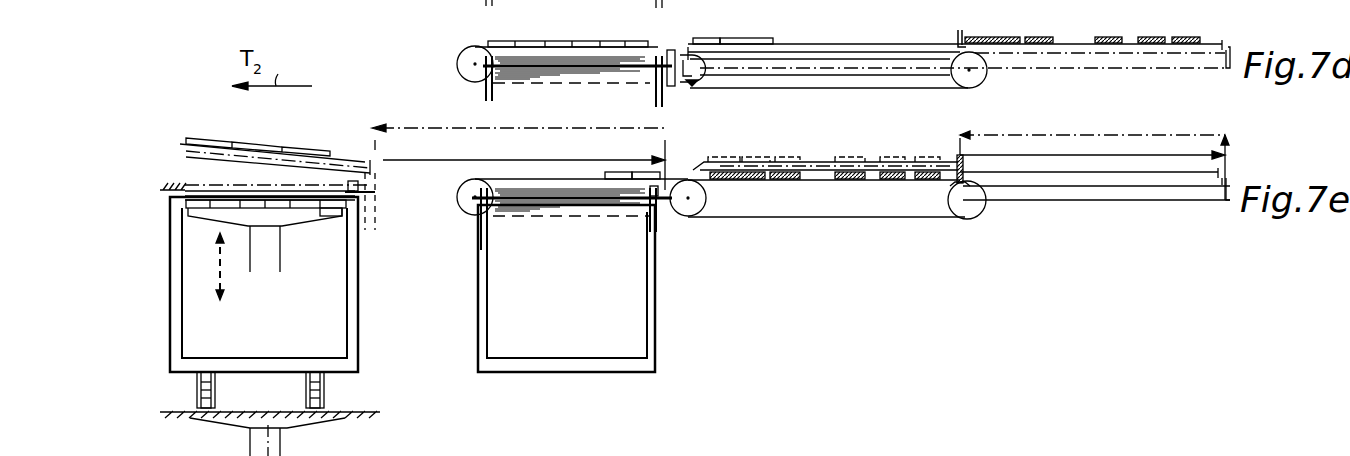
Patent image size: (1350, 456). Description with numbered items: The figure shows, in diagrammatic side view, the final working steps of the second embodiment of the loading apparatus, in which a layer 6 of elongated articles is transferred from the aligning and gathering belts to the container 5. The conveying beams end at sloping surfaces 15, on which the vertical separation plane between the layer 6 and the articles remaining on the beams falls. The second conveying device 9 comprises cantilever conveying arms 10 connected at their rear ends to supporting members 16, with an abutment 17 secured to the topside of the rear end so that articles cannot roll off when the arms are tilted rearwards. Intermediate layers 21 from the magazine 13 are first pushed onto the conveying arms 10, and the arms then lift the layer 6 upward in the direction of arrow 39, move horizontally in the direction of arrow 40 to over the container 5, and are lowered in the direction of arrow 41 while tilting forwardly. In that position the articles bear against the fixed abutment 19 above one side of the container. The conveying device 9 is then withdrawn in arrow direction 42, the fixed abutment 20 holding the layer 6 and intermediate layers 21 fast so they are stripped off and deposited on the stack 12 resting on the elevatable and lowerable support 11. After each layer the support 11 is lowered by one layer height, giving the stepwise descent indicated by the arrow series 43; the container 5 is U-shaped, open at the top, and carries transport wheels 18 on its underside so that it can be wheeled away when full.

In FIG. 7e, the container 5 is at (358, 294).
In FIG. 7d, the layer 6 is at (562, 40).
In FIG. 7e, the layer 6 is at (290, 142).
In FIG. 7d, the second conveying device 9 is at (673, 54).
In FIG. 7d, the conveying arm 10 is at (650, 69).
In FIG. 7e, the support 11 is at (280, 253).
In FIG. 7e, the stack 12 is at (333, 218).
In FIG. 7e, the magazine 13 is at (652, 296).
In FIG. 7d, the sloping surface 15 is at (688, 48).
In FIG. 7d, the supporting member 16 is at (692, 84).
In FIG. 7d, the abutment 17 is at (660, 58).
In FIG. 7e, the transport wheel 18 is at (326, 384).
In FIG. 7e, the fixed abutment 19 is at (168, 172).
In FIG. 7e, the fixed abutment 20 is at (357, 186).
In FIG. 7e, the intermediate layer 21 is at (210, 143).
In FIG. 7e, the arrow 39 is at (668, 164).
In FIG. 7e, the arrow 40 is at (507, 128).
In FIG. 7e, the arrow 41 is at (371, 148).
In FIG. 7e, the arrow direction 42 is at (453, 160).
In FIG. 7e, the arrow series 43 is at (227, 292).